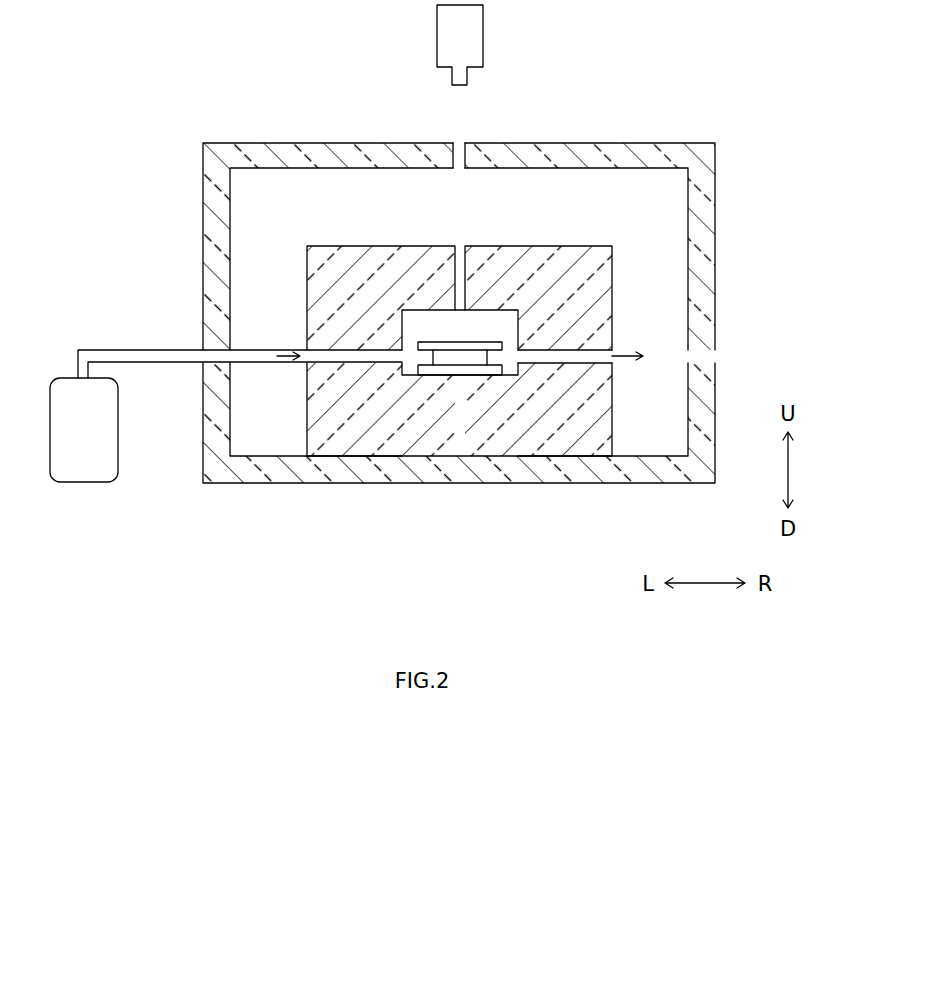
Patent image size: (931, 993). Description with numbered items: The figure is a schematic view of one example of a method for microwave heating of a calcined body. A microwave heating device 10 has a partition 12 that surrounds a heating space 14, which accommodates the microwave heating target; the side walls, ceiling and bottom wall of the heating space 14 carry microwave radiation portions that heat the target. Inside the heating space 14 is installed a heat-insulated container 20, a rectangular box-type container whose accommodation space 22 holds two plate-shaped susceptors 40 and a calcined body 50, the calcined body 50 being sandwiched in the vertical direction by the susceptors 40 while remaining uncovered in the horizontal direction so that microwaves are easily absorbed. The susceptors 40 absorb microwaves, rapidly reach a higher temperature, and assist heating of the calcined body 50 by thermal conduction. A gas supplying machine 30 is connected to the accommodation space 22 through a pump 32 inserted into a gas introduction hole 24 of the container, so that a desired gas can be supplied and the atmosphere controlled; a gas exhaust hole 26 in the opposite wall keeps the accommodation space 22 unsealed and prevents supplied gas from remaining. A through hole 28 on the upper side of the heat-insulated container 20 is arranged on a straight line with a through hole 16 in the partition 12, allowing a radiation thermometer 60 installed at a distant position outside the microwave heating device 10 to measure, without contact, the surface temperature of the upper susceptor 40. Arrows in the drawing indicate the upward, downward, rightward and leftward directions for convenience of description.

The microwave heating device 10 is at (665, 140).
The partition 12 is at (577, 148).
The heating space 14 is at (274, 188).
The through hole 16 is at (461, 160).
The heat-insulated container 20 is at (454, 315).
The accommodation space 22 is at (418, 325).
The gas introduction hole 24 is at (352, 358).
The gas exhaust hole 26 is at (582, 360).
The through hole 28 is at (466, 258).
The gas supplying machine 30 is at (67, 378).
The pump 32 is at (178, 364).
The susceptor 40 is at (502, 350).
The calcined body 50 is at (452, 358).
The radiation thermometer 60 is at (483, 32).